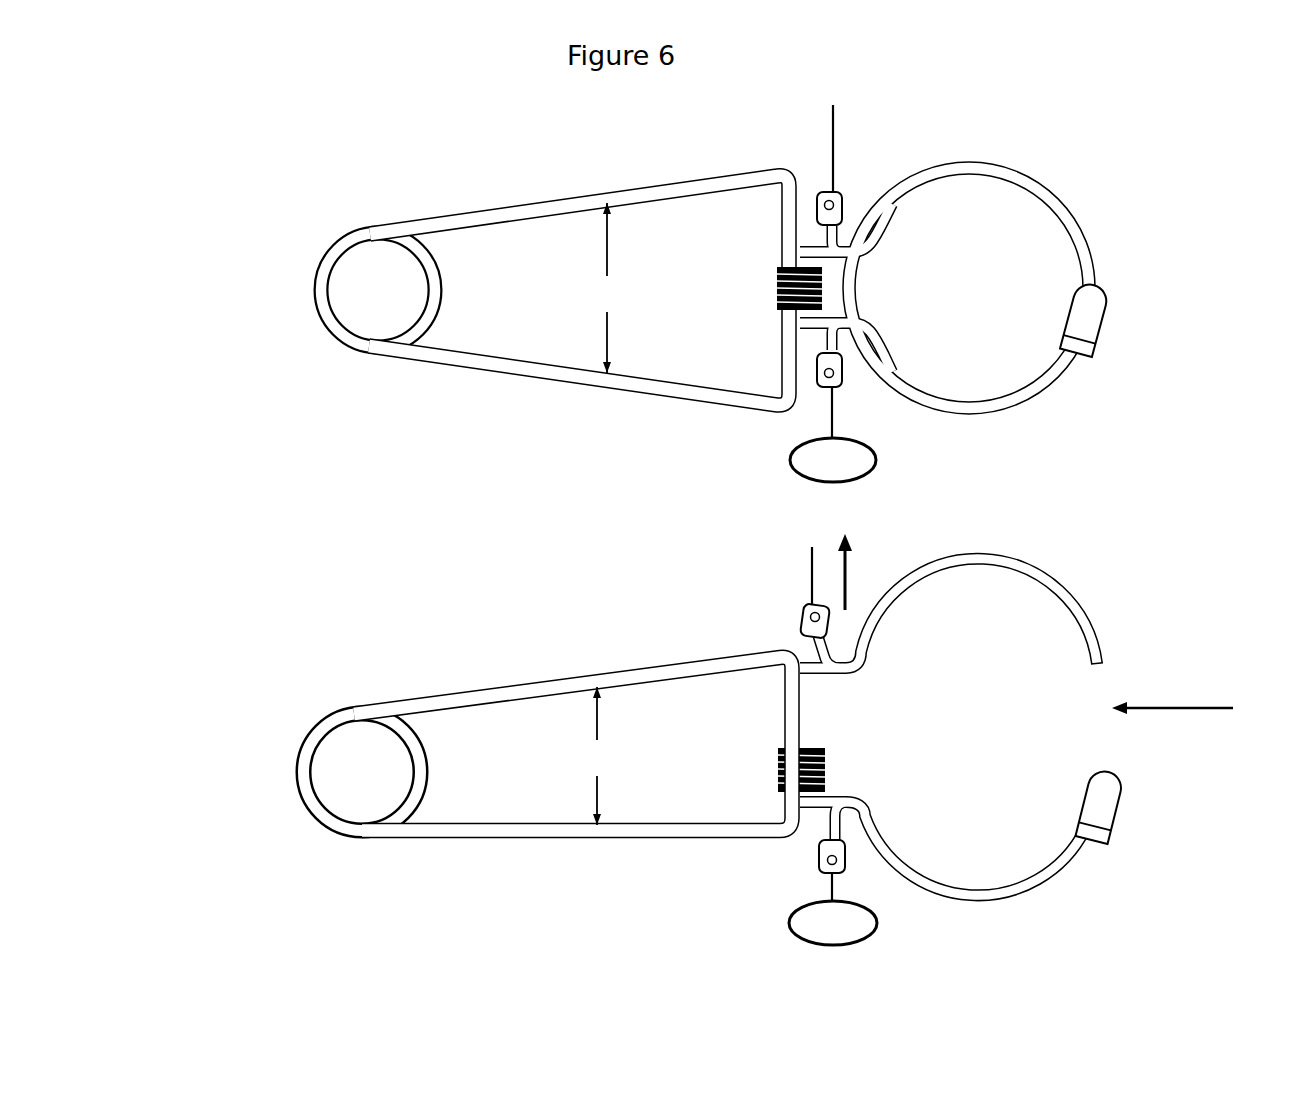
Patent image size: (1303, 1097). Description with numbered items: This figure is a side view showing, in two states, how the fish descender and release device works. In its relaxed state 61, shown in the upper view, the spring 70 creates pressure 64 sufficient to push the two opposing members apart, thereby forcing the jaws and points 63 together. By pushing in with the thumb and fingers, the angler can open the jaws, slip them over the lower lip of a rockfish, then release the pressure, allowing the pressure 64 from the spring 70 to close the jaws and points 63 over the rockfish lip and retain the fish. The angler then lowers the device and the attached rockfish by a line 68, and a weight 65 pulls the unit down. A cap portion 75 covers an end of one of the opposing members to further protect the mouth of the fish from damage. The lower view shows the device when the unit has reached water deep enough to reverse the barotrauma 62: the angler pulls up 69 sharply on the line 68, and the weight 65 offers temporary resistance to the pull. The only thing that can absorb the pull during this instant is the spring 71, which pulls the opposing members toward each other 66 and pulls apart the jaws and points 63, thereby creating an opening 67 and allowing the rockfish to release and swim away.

The relaxed state 61 is at (315, 288).
The deep-water release state 62 is at (296, 761).
The jaws and points 63 is at (1097, 287).
The pressure 64 is at (606, 288).
The weight 65 is at (812, 460).
The pulling of opposing members toward each other 66 is at (586, 756).
The opening 67 is at (1185, 696).
The line 68 is at (835, 137).
The sharp upward pull 69 is at (865, 572).
The spring 70 is at (370, 353).
The spring 71 is at (323, 827).
The cap portion 75 is at (1102, 798).